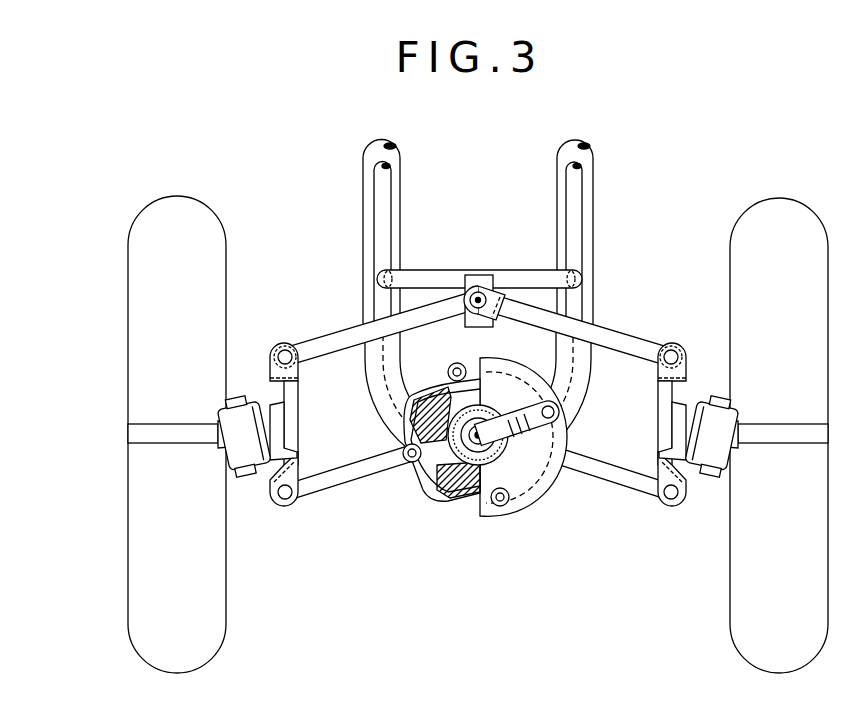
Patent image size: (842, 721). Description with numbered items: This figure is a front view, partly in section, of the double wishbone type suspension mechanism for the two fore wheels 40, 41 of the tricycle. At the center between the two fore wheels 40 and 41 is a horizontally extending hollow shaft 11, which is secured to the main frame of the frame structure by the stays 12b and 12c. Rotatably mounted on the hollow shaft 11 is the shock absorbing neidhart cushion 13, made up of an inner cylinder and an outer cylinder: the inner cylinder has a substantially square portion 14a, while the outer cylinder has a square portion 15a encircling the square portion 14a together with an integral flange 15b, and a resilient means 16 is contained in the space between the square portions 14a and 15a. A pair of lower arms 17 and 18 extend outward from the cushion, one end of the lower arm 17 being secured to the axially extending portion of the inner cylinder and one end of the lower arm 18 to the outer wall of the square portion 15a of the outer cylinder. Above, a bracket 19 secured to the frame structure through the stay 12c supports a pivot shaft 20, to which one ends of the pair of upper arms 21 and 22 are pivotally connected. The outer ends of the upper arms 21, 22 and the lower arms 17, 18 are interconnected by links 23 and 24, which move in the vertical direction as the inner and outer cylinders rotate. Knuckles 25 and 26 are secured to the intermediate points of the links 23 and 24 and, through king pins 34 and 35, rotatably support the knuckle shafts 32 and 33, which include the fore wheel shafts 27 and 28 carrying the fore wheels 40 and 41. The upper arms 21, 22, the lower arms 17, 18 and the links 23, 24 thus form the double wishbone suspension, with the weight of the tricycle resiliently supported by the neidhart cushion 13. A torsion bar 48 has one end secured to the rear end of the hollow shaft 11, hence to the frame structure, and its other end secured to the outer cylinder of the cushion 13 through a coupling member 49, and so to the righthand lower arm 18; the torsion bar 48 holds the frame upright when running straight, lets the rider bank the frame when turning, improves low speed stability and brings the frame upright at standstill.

The hollow shaft 11 is at (452, 500).
The stay 12b is at (593, 152).
The stay 12c is at (594, 212).
The neidhart cushion 13 is at (464, 506).
The square portion 14a is at (440, 456).
The square portion 15a is at (440, 496).
The flange 15b is at (520, 500).
The resilient means 16 is at (410, 434).
The lower arm 17 is at (628, 493).
The lower arm 18 is at (345, 493).
The bracket 19 is at (472, 279).
The pivot shaft 20 is at (489, 286).
The upper arm 21 is at (628, 340).
The upper arm 22 is at (338, 335).
The link 23 is at (658, 400).
The link 24 is at (300, 400).
The knuckle 25 is at (696, 470).
The knuckle 26 is at (262, 470).
The fore wheel shaft 27 is at (790, 444).
The fore wheel shaft 28 is at (158, 433).
The knuckle shaft 32 is at (740, 421).
The knuckle shaft 33 is at (226, 420).
The king pin 34 is at (711, 398).
The king pin 35 is at (246, 398).
The fore wheel 40 is at (783, 198).
The fore wheel 41 is at (184, 196).
The torsion bar 48 is at (538, 490).
The coupling member 49 is at (562, 427).